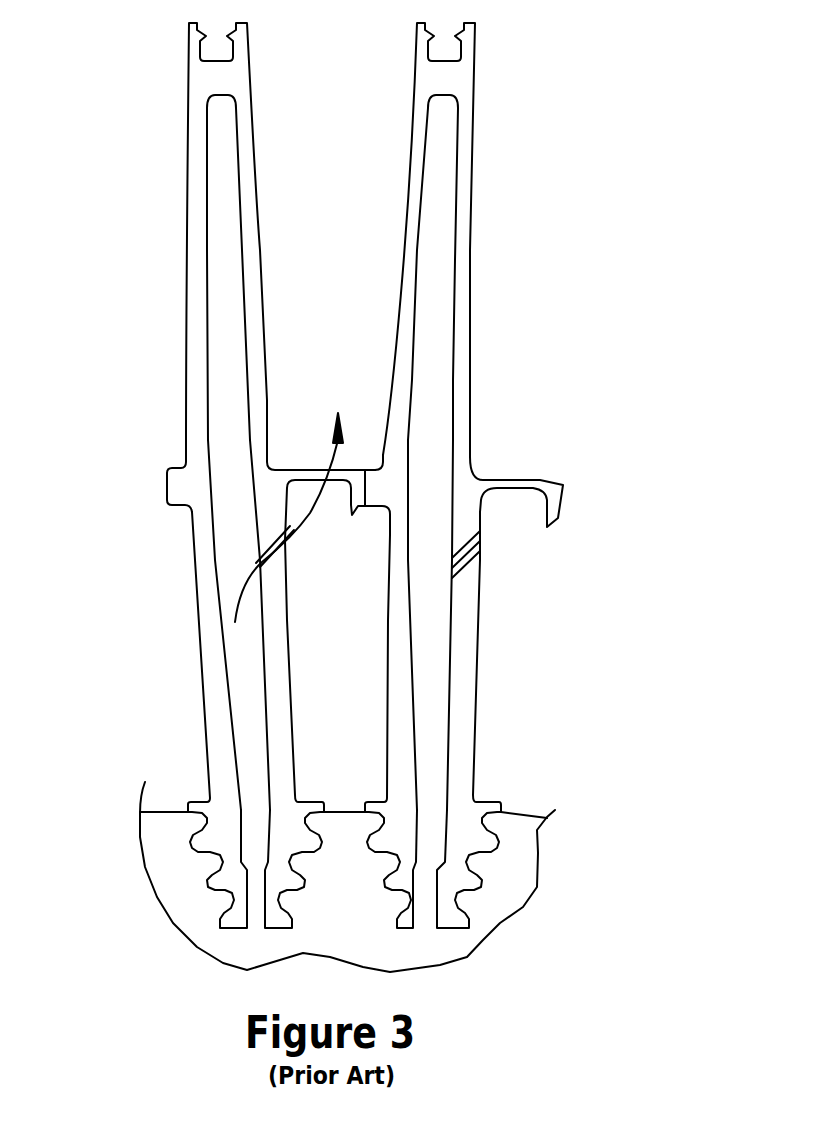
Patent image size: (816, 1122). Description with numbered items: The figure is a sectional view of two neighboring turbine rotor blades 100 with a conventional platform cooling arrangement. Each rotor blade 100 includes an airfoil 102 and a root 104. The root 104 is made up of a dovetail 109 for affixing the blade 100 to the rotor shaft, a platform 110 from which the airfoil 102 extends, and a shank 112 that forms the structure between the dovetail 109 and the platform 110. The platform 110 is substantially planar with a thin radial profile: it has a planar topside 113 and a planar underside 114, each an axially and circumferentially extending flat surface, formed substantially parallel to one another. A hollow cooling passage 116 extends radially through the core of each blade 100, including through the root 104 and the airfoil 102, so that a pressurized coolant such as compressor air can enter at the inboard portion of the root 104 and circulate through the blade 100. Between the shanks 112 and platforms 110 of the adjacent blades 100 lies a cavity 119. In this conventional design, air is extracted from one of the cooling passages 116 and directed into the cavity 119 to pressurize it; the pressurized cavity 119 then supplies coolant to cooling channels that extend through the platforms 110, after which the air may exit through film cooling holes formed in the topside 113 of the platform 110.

The turbine rotor blade 100 is at (287, 224).
The airfoil 102 is at (192, 296).
The root 104 is at (584, 731).
The dovetail 109 is at (462, 888).
The platform 110 is at (318, 474).
The shank 112 is at (146, 690).
The planar topside 113 is at (350, 470).
The planar underside 114 is at (335, 482).
The cooling passage 116 is at (228, 530).
The cavity 119 is at (360, 646).